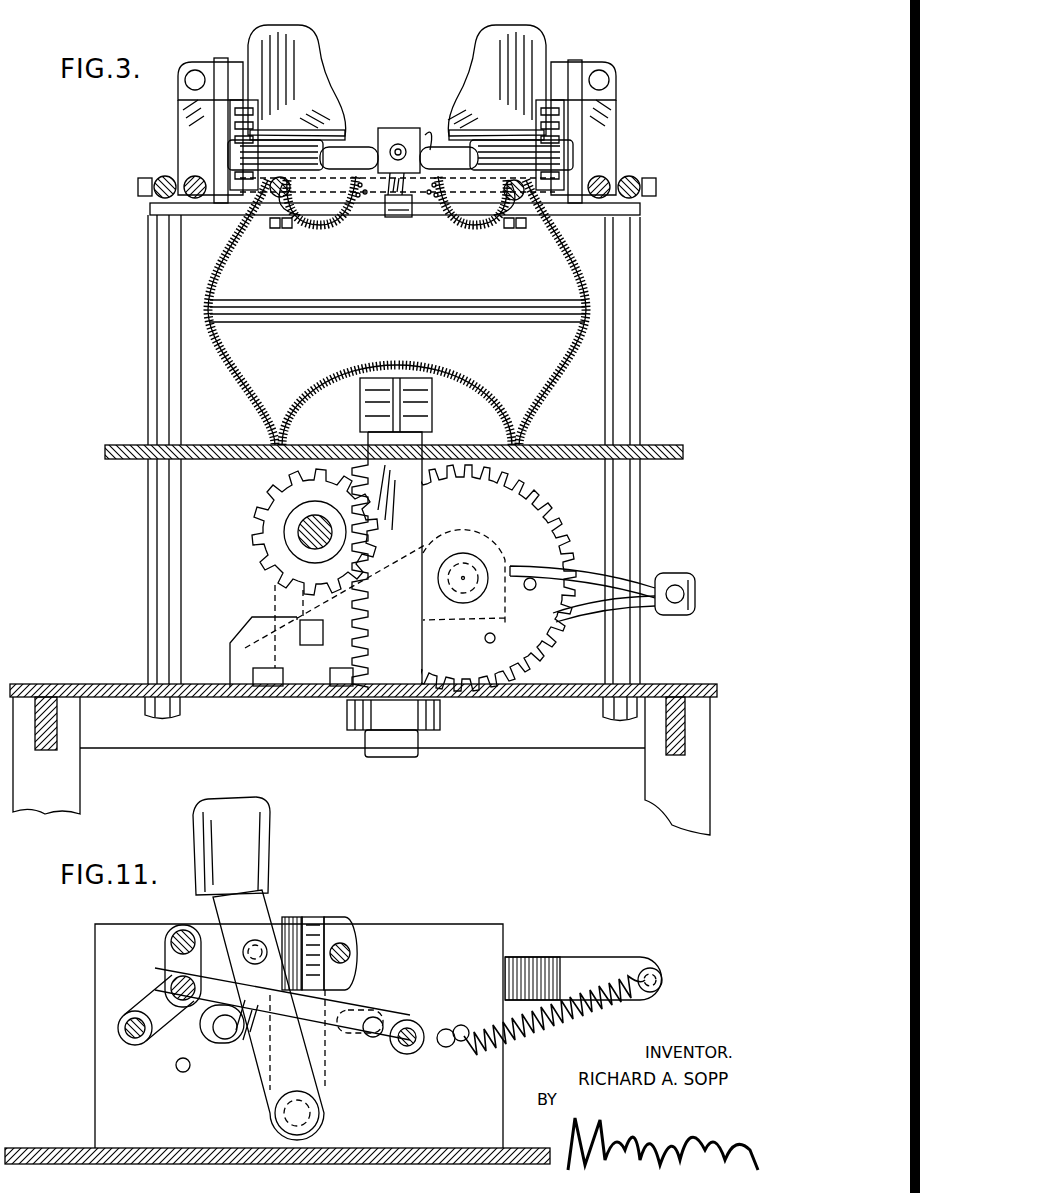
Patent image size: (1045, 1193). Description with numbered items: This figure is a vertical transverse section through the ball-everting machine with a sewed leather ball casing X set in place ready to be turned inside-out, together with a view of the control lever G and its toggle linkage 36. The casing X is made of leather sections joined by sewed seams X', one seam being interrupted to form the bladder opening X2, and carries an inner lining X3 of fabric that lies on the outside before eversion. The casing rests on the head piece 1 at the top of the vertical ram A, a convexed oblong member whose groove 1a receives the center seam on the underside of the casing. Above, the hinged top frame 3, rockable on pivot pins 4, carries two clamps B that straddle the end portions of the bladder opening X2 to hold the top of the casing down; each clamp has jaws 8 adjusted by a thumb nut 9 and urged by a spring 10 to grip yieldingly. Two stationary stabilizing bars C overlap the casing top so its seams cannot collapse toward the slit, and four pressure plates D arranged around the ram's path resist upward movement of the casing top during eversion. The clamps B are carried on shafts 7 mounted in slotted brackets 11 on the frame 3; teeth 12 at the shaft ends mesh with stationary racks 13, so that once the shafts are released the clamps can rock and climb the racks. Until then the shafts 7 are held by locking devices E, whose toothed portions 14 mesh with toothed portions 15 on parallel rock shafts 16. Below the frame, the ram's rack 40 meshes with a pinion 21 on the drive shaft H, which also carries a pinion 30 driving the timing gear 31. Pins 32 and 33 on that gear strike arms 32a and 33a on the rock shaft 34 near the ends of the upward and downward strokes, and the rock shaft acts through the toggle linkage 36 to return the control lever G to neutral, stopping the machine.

In FIG. 3, the head piece 1 is at (366, 407).
In FIG. 3, the groove 1a is at (385, 377).
In FIG. 3, the top frame 3 is at (576, 219).
In FIG. 3, the pivot pins 4 is at (138, 186).
In FIG. 3, the clamp-carrying shafts 7 is at (316, 126).
In FIG. 3, the jaw 8 is at (405, 218).
In FIG. 3, the thumb nut 9 is at (388, 146).
In FIG. 3, the spring 10 is at (356, 148).
In FIG. 3, the brackets 11 is at (221, 58).
In FIG. 3, the teeth 12 is at (302, 152).
In FIG. 3, the stationary racks 13 is at (240, 132).
In FIG. 3, the toothed portions 14 is at (212, 143).
In FIG. 3, the toothed portions 15 is at (150, 210).
In FIG. 3, the rock shafts 16 is at (165, 178).
In FIG. 3, the pinion 21 is at (280, 496).
In FIG. 3, the pinion 30 is at (262, 545).
In FIG. 3, the timing gear 31 is at (531, 645).
In FIG. 3, the pin 32 is at (484, 638).
In FIG. 3, the arm 32a is at (581, 620).
In FIG. 3, the pin 33 is at (533, 591).
In FIG. 3, the arm 33a is at (592, 568).
In FIG. 3, the rock shaft 34 is at (688, 604).
In FIG. 11, the toggle linkage 36 is at (375, 982).
In FIG. 3, the rack 40 is at (350, 733).
In FIG. 3, the ram A is at (431, 446).
In FIG. 3, the clamps B is at (392, 218).
In FIG. 3, the stabilizing bars C is at (318, 226).
In FIG. 3, the pressure plates D is at (322, 120).
In FIG. 3, the locking devices E is at (185, 128).
In FIG. 11, the control lever G is at (258, 893).
In FIG. 3, the drive shaft H is at (300, 527).
In FIG. 3, the ball casing X is at (397, 362).
In FIG. 3, the sewed seams X' is at (399, 307).
In FIG. 3, the bladder opening X2 is at (433, 144).
In FIG. 3, the inner lining X3 is at (229, 262).